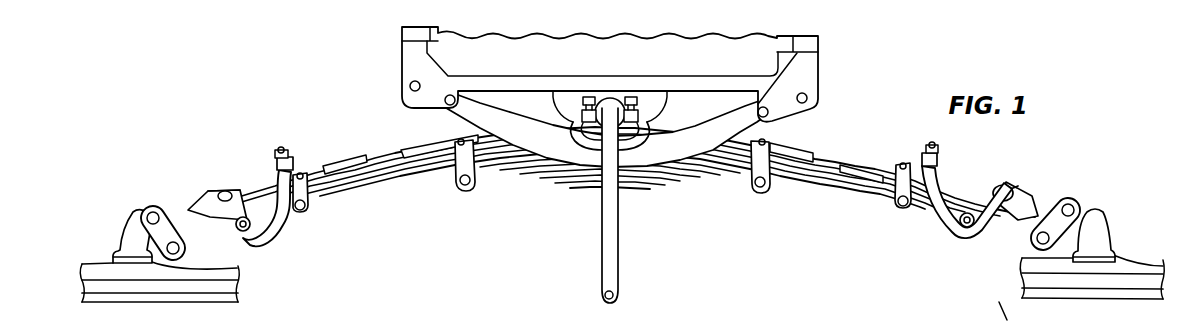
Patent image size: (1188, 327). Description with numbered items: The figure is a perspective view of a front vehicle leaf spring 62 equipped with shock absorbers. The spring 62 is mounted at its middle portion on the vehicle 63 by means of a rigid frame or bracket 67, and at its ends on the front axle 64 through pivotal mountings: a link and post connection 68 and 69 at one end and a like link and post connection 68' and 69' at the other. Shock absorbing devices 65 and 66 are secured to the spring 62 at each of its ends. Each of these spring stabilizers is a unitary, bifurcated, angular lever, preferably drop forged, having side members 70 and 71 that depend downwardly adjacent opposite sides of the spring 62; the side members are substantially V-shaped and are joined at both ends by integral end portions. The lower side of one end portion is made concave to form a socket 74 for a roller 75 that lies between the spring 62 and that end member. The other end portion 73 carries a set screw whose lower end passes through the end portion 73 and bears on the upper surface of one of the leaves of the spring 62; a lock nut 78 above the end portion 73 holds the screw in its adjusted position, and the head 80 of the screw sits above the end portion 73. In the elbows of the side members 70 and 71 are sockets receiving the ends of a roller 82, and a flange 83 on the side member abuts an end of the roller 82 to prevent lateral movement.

The front vehicle leaf spring 62 is at (857, 165).
The vehicle 63 is at (770, 44).
The front axle 64 is at (227, 287).
The shock absorbing device 65 is at (1020, 186).
The shock absorbing device 66 is at (228, 191).
The rigid frame or bracket 67 is at (752, 127).
The link 68 is at (1109, 235).
The link 68' is at (119, 231).
The post 69 is at (1073, 222).
The post 69' is at (162, 219).
The side member 70 is at (260, 228).
The side member 71 is at (288, 212).
The end portion 73 is at (278, 172).
The socket 74 is at (194, 200).
The roller 75 is at (227, 194).
The lock nut 78 is at (291, 165).
The head 80 is at (284, 157).
The roller 82 is at (240, 230).
The flange 83 is at (244, 232).